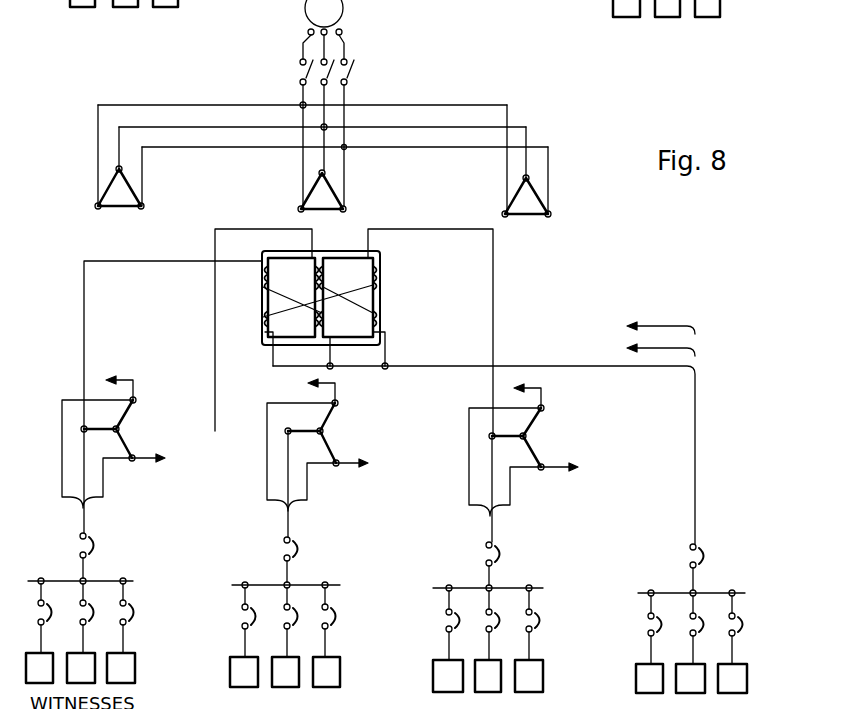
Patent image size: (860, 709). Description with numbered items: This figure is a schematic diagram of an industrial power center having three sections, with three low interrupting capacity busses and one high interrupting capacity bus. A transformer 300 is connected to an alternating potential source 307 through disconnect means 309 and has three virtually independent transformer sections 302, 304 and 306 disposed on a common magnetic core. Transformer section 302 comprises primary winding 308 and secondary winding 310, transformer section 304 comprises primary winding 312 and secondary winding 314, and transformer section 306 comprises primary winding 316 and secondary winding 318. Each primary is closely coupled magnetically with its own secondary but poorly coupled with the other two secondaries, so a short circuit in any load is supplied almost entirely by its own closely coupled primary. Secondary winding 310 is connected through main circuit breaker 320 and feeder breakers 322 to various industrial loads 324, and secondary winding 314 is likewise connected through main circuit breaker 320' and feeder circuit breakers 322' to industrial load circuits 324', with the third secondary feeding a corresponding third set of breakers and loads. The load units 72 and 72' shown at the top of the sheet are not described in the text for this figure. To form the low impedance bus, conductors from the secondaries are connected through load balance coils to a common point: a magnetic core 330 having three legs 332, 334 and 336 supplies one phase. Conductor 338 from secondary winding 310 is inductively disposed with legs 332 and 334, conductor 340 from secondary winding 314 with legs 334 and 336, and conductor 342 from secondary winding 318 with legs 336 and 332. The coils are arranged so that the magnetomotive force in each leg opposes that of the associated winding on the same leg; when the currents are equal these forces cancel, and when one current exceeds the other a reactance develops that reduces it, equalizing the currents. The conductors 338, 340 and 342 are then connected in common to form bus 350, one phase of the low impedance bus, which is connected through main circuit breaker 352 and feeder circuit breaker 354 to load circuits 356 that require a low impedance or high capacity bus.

The load units 72 is at (124, 20).
The load units 72' is at (666, 26).
The transformer 300 is at (603, 284).
The transformer section 302 is at (141, 491).
The transformer section 304 is at (348, 496).
The transformer section 306 is at (551, 499).
The alternating potential source 307 is at (343, 12).
The primary winding 308 is at (178, 201).
The disconnect means 309 is at (352, 73).
The secondary winding 310 is at (160, 436).
The primary winding 312 is at (380, 204).
The secondary winding 314 is at (363, 441).
The primary winding 316 is at (584, 209).
The secondary winding 318 is at (568, 446).
The main circuit breaker 320 is at (108, 555).
The main circuit breaker 320' is at (313, 559).
The feeder breakers 322 is at (101, 601).
The feeder circuit breakers 322' is at (306, 605).
The industrial loads 324 is at (100, 654).
The industrial load circuits 324' is at (306, 658).
The magnetic core 330 is at (447, 275).
The leg 332 is at (263, 304).
The leg 334 is at (346, 308).
The leg 336 is at (383, 305).
The conductor 338 is at (86, 334).
The conductor 340 is at (212, 334).
The conductor 342 is at (493, 305).
The bus 350 is at (528, 364).
The main circuit breaker 352 is at (708, 558).
The feeder circuit breaker 354 is at (707, 613).
The load circuits 356 is at (740, 684).